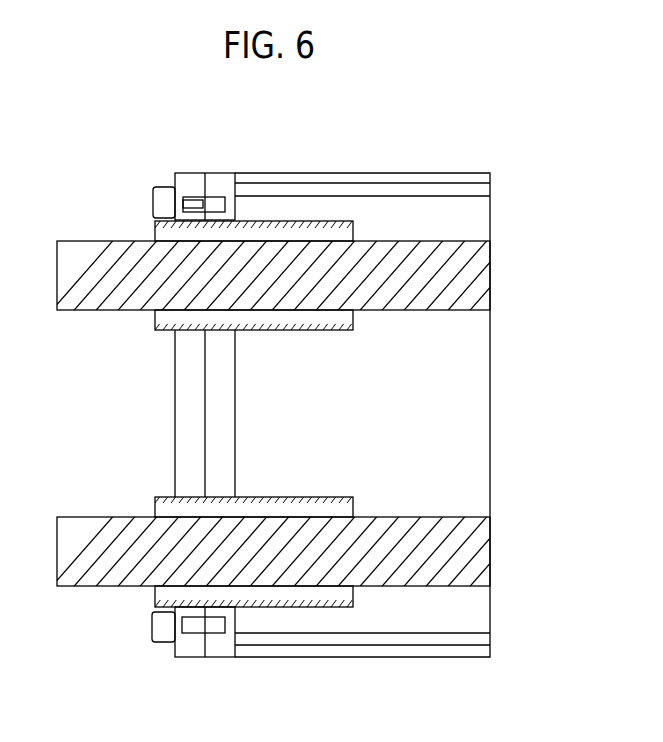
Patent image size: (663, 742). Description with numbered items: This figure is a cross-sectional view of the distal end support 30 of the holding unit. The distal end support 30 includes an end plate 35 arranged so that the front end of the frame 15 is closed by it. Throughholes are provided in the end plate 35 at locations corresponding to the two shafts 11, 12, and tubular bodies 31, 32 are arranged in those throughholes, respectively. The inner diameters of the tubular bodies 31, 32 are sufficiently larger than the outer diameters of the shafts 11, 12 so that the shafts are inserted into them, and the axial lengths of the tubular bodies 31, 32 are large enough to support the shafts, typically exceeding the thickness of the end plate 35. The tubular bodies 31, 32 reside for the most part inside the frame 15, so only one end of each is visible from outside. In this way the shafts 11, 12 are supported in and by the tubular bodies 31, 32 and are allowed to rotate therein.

The shaft 11 is at (455, 557).
The shaft 12 is at (460, 277).
The frame 15 is at (318, 177).
The distal end support 30 is at (220, 162).
The tubular body 31 is at (320, 498).
The tubular body 32 is at (328, 330).
The end plate 35 is at (187, 425).